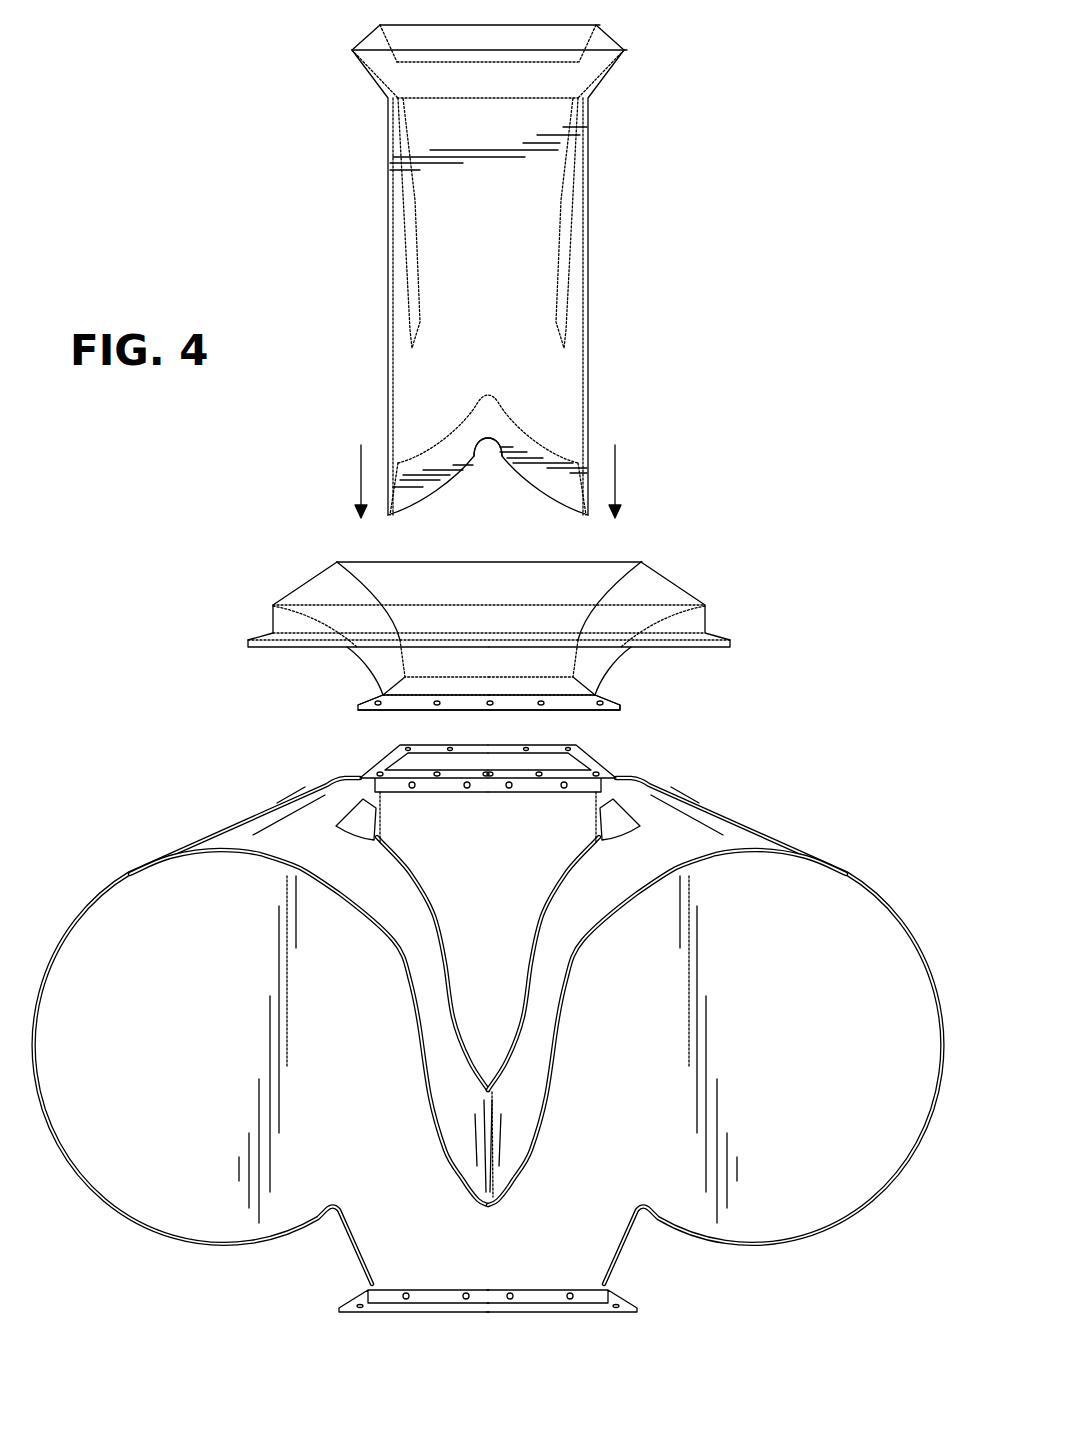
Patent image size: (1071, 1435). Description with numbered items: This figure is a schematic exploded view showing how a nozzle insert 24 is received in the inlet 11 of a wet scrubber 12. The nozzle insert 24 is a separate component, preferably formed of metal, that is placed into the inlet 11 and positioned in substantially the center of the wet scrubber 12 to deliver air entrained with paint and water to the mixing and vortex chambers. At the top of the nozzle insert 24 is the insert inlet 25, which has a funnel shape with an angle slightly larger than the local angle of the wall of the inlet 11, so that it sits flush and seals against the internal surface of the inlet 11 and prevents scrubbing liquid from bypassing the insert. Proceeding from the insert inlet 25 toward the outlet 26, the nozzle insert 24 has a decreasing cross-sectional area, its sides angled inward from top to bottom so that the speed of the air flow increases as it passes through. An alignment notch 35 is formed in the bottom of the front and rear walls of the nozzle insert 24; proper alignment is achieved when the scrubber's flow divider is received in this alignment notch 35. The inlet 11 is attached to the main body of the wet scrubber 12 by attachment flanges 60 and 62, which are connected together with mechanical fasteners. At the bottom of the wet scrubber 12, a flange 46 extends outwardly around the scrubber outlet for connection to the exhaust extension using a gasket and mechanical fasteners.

The inlet 11 is at (519, 626).
The wet scrubber 12 is at (488, 1014).
The nozzle insert 24 is at (523, 277).
The insert inlet 25 is at (562, 25).
The outlet 26 is at (442, 490).
The alignment notch 35 is at (486, 460).
The flange 46 is at (630, 1299).
The attachment flange 60 is at (607, 695).
The attachment flange 62 is at (598, 760).